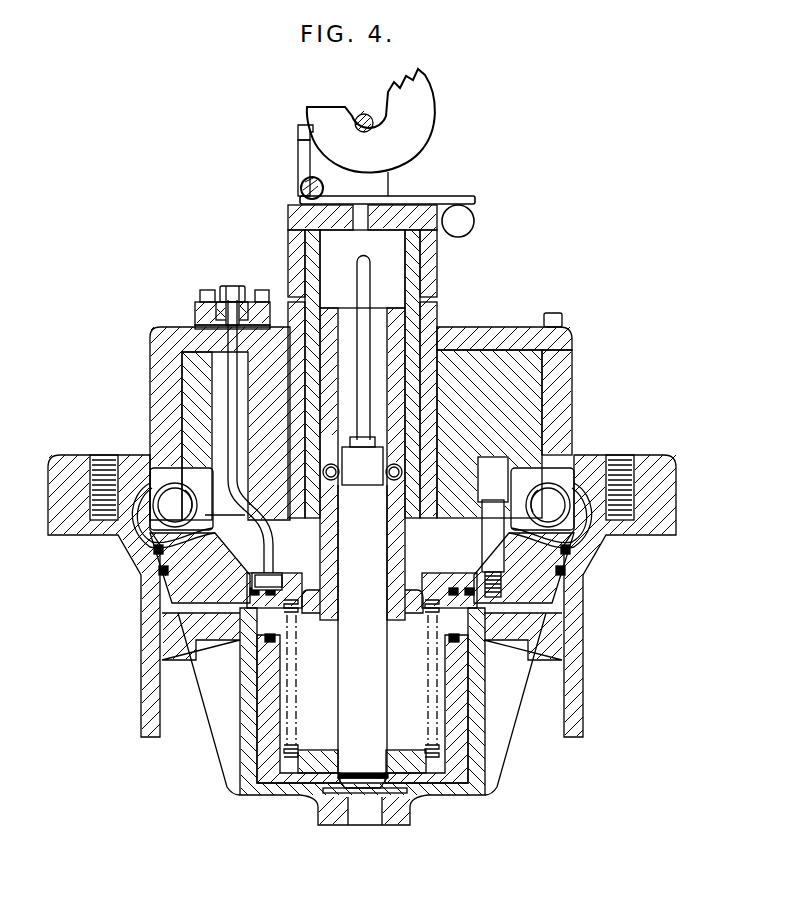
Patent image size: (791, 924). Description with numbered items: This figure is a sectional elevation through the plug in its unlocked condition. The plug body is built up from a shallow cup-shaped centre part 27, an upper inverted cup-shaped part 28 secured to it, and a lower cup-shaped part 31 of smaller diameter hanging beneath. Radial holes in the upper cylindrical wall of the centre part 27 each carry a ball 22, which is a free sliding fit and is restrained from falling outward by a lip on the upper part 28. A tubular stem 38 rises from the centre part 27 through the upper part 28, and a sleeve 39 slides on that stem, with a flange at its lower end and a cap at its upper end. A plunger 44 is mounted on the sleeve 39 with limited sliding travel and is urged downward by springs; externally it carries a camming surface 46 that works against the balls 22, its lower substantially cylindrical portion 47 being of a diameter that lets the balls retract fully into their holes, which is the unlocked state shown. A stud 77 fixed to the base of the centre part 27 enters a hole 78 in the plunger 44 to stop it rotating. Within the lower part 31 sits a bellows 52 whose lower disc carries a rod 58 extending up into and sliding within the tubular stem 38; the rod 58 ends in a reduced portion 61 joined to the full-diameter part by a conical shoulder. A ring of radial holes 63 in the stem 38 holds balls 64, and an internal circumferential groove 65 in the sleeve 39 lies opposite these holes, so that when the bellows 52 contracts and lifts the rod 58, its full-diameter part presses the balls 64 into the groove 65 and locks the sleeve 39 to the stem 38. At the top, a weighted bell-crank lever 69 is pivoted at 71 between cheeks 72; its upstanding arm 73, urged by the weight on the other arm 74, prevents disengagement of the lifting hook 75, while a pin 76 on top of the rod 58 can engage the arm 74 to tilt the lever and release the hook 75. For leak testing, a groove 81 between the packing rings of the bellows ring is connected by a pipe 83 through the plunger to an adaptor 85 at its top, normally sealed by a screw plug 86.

The ball 22 is at (575, 483).
The centre part 27 is at (217, 583).
The upper inverted cup-shaped part 28 is at (562, 352).
The lower cup-shaped part 31 is at (243, 737).
The tubular stem 38 is at (396, 548).
The sleeve 39 is at (412, 322).
The plunger 44 is at (487, 352).
The camming surface 46 is at (197, 488).
The lower substantially cylindrical portion 47 is at (207, 511).
The bellows 52 is at (437, 735).
The rod 58 is at (369, 688).
The reduced portion 61 is at (383, 462).
The radial holes 63 is at (399, 450).
The balls 64 is at (343, 488).
The internal circumferential groove 65 is at (403, 404).
The bell-crank lever 69 is at (300, 160).
The pivot 71 is at (302, 188).
The cheeks 72 is at (379, 181).
The upstanding arm 73 is at (298, 137).
The arm 74 is at (462, 204).
The hook 75 is at (413, 104).
The pin 76 is at (363, 268).
The stud 77 is at (489, 529).
The hole 78 is at (503, 458).
The groove 81 is at (461, 587).
The pipe 83 is at (225, 425).
The adaptor 85 is at (242, 302).
The screw plug 86 is at (231, 287).